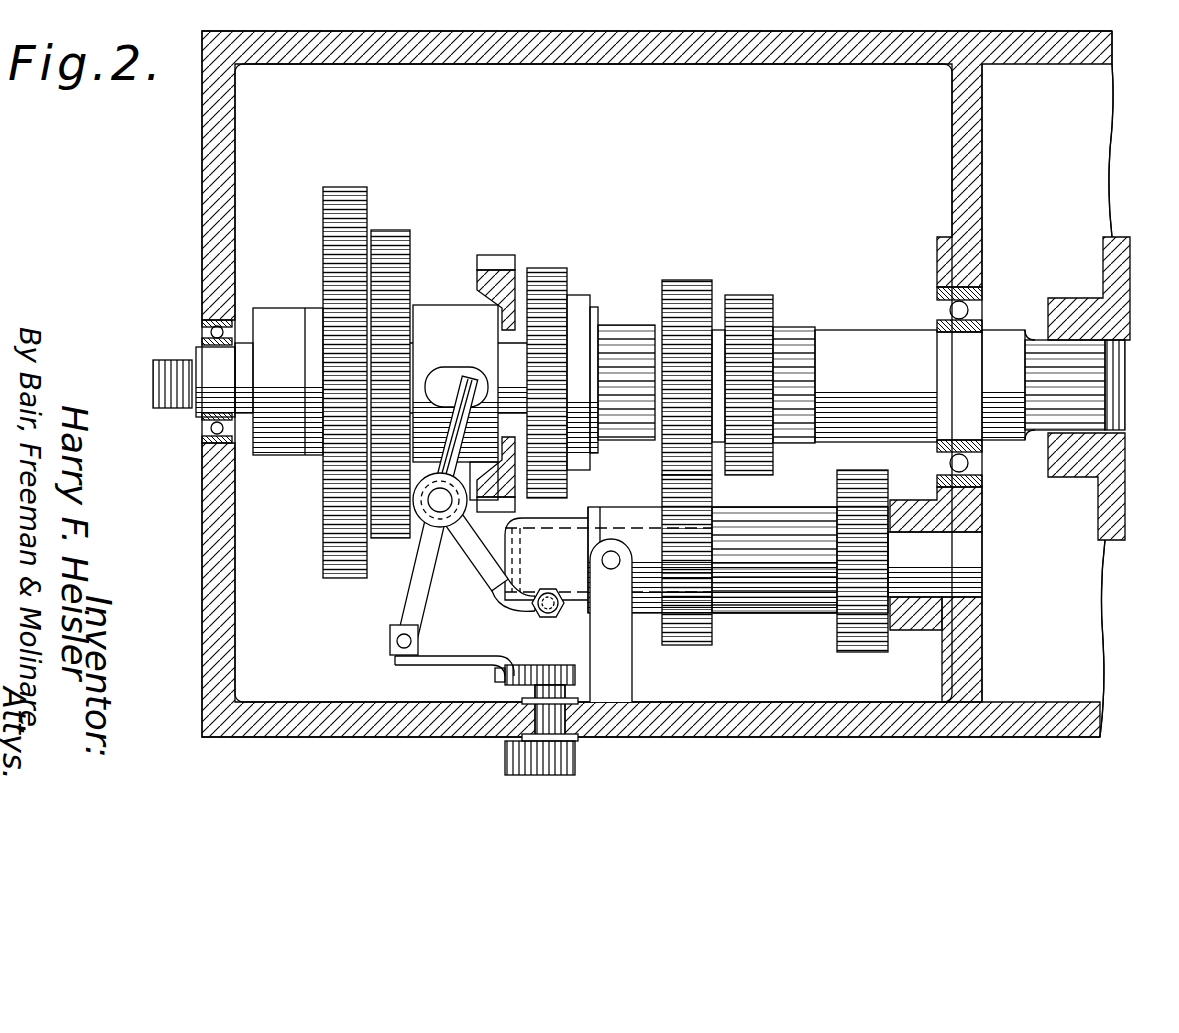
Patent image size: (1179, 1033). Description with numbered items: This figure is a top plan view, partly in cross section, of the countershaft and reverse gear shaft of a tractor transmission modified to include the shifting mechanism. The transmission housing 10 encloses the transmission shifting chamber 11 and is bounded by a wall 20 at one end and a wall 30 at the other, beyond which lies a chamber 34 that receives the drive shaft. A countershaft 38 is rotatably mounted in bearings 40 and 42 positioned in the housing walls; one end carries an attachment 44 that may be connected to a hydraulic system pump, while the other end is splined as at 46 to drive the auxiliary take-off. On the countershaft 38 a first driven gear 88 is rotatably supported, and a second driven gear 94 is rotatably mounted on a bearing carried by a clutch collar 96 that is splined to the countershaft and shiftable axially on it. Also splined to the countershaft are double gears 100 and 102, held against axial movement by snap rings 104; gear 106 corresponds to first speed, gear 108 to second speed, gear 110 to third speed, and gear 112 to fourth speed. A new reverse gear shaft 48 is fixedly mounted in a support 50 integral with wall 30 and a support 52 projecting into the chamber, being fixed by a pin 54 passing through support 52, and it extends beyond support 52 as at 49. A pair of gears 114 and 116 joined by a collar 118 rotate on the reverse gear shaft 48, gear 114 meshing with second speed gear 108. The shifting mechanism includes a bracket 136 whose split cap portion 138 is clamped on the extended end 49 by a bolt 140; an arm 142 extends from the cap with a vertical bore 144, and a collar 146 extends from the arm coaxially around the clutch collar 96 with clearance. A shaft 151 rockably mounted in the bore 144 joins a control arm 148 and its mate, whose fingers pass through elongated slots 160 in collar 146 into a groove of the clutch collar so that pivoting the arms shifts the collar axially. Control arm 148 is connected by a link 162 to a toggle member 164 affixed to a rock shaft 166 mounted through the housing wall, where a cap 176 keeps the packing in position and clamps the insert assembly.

The transmission housing 10 is at (380, 742).
The transmission shifting chamber 11 is at (855, 155).
The wall 20 is at (200, 640).
The wall 30 is at (963, 660).
The chamber 34 is at (1068, 610).
The countershaft 38 is at (866, 345).
The bearing 40 is at (200, 443).
The bearing 42 is at (980, 490).
The attachment 44 is at (160, 406).
The splined end 46 is at (1095, 410).
The reverse gear shaft 48 is at (915, 580).
The extended end of reverse gear shaft 49 is at (565, 530).
The support 50 is at (910, 598).
The support 52 is at (645, 612).
The pin 54 is at (611, 562).
The first driven gear 88 is at (352, 205).
The second driven gear 94 is at (393, 240).
The clutch collar 96 is at (432, 378).
The double gear 100 is at (786, 323).
The double gear 102 is at (590, 288).
The snap rings 104 is at (655, 325).
The gear 106 is at (752, 297).
The gear 108 is at (690, 278).
The gear 110 is at (545, 275).
The gear 112 is at (497, 262).
The gear 114 is at (690, 642).
The gear 116 is at (860, 643).
The collar 118 is at (768, 605).
The bracket 136 is at (489, 600).
The cap portion 138 is at (500, 604).
The bolt 140 is at (540, 594).
The arm 142 is at (470, 552).
The vertical bore 144 is at (546, 559).
The collar 146 is at (433, 308).
The control arm 148 is at (408, 590).
The shaft 151 is at (425, 522).
The elongated slots 160 is at (444, 366).
The link 162 is at (428, 675).
The toggle member 164 is at (549, 672).
The rock shaft 166 is at (560, 724).
The cap 176 is at (575, 772).